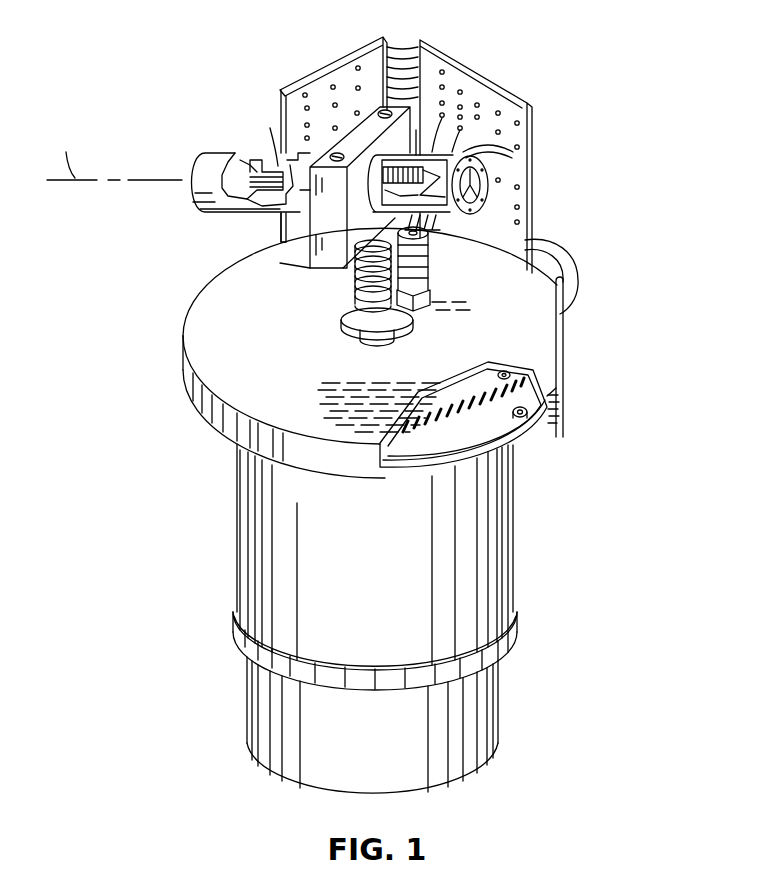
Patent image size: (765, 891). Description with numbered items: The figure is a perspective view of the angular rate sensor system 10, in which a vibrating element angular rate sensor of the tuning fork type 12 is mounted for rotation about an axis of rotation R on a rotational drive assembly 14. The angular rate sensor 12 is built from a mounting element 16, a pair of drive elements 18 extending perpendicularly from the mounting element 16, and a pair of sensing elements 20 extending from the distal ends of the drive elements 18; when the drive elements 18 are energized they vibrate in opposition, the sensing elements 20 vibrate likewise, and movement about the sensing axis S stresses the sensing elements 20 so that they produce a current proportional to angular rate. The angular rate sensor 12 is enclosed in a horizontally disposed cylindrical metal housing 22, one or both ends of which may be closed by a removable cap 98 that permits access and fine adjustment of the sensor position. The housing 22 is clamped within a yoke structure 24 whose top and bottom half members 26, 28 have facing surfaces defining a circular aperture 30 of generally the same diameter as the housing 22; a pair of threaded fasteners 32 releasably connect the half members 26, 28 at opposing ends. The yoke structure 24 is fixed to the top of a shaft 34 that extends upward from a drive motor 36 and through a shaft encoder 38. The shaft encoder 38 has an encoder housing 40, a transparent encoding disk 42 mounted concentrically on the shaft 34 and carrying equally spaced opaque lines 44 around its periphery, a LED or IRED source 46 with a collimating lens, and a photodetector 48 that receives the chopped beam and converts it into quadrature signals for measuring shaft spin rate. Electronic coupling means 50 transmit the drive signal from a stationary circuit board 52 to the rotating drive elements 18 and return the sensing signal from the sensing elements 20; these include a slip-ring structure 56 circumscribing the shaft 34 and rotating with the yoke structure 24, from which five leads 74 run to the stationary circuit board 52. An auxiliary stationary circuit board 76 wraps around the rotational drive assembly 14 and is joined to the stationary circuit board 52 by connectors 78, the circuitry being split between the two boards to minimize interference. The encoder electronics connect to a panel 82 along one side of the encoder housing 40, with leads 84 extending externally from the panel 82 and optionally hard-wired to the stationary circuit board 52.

The angular rate sensor system 10 is at (580, 242).
The vibrating element angular rate sensor 12 is at (255, 162).
The rotational drive assembly 14 is at (233, 615).
The mounting element 16 is at (449, 213).
The drive elements 18 is at (396, 178).
The sensing elements 20 is at (268, 168).
The cylindrical metal housing 22 is at (190, 177).
The yoke structure 24 is at (303, 272).
The top half member 26 is at (300, 232).
The bottom half member 28 is at (340, 258).
The circular aperture 30 is at (360, 187).
The threaded fasteners 32 is at (385, 110).
The shaft 34 is at (378, 326).
The drive motor 36 is at (493, 568).
The shaft encoder 38 is at (183, 372).
The encoder housing 40 is at (192, 322).
The encoding disk 42 is at (397, 458).
The opaque lines 44 is at (457, 428).
The LED or IRED source 46 is at (521, 425).
The photodetector 48 is at (502, 372).
The electronic coupling means 50 is at (436, 270).
The stationary circuit board 52 is at (503, 87).
The slip-ring structure 56 is at (353, 295).
The leads 74 is at (482, 158).
The auxiliary stationary circuit board 76 is at (334, 62).
The connectors 78 is at (405, 46).
The panel 82 is at (563, 345).
The leads 84 is at (575, 278).
The removable cap 98 is at (480, 212).